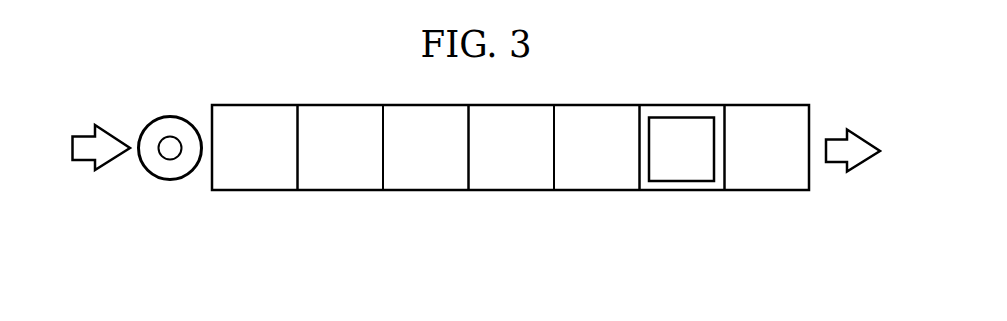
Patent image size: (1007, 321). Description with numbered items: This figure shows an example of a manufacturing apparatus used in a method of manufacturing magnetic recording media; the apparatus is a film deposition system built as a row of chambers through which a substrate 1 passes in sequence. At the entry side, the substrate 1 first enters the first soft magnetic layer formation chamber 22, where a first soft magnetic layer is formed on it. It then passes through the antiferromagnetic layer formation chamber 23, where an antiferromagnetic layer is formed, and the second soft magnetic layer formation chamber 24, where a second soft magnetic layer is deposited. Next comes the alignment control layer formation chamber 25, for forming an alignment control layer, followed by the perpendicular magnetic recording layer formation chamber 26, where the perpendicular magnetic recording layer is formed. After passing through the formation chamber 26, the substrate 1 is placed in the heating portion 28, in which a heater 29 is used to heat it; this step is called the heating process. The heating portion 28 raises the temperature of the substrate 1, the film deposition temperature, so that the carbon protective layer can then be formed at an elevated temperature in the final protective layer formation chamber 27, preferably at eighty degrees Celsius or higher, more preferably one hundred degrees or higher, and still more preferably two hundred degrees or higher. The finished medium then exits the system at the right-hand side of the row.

The substrate 1 is at (173, 180).
The first soft magnetic layer formation chamber 22 is at (255, 190).
The antiferromagnetic layer formation chamber 23 is at (340, 190).
The second soft magnetic layer formation chamber 24 is at (426, 190).
The alignment control layer formation chamber 25 is at (511, 190).
The perpendicular magnetic recording layer formation chamber 26 is at (597, 190).
The protective layer formation chamber 27 is at (768, 190).
The heating portion 28 is at (662, 190).
The heater 29 is at (703, 181).